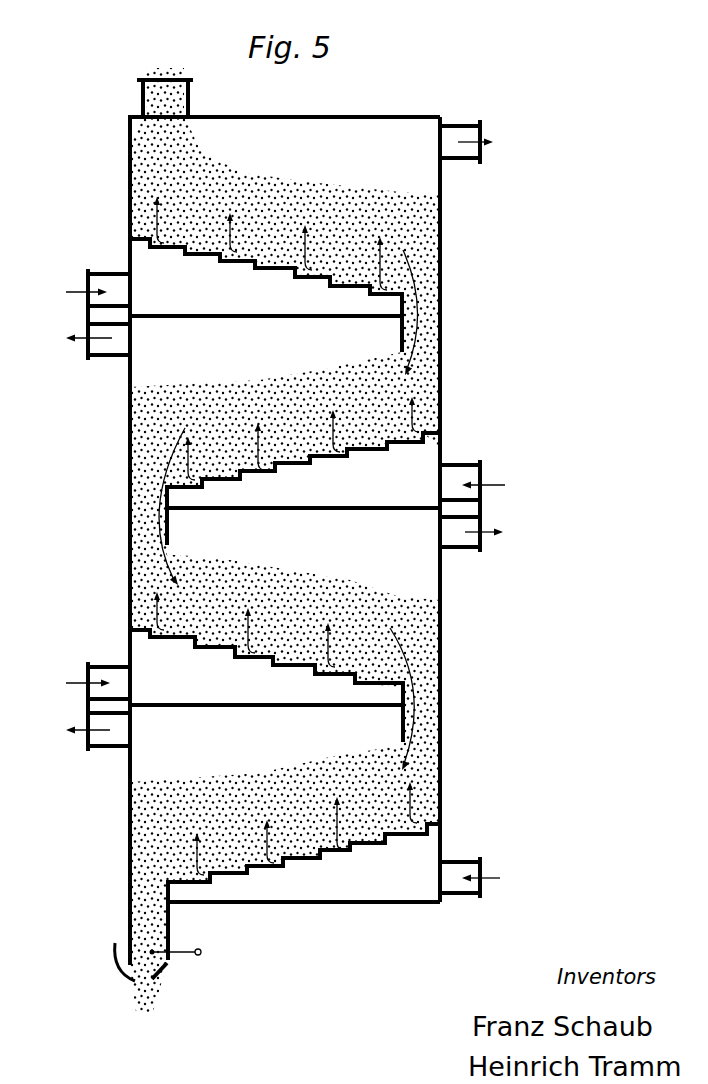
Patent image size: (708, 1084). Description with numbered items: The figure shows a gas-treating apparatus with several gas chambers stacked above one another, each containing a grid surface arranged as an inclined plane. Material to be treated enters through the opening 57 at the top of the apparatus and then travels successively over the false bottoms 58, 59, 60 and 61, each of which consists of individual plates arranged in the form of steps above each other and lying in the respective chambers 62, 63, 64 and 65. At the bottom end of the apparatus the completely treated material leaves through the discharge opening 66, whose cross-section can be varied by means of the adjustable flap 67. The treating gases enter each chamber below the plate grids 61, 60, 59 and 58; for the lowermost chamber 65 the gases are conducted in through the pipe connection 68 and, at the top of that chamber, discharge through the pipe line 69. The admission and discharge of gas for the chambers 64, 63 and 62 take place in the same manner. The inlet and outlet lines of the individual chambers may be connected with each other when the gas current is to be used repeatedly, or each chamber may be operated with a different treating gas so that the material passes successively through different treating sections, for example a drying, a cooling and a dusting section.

The opening 57 is at (190, 99).
The false bottom 58 is at (345, 282).
The false bottom 59 is at (365, 452).
The false bottom 60 is at (377, 682).
The false bottom 61 is at (363, 843).
The chamber 62 is at (443, 188).
The chamber 63 is at (443, 372).
The chamber 64 is at (443, 598).
The chamber 65 is at (445, 763).
The discharge opening 66 is at (151, 955).
The adjustable flap 67 is at (114, 951).
The pipe connection 68 is at (478, 870).
The pipe line 69 is at (120, 737).